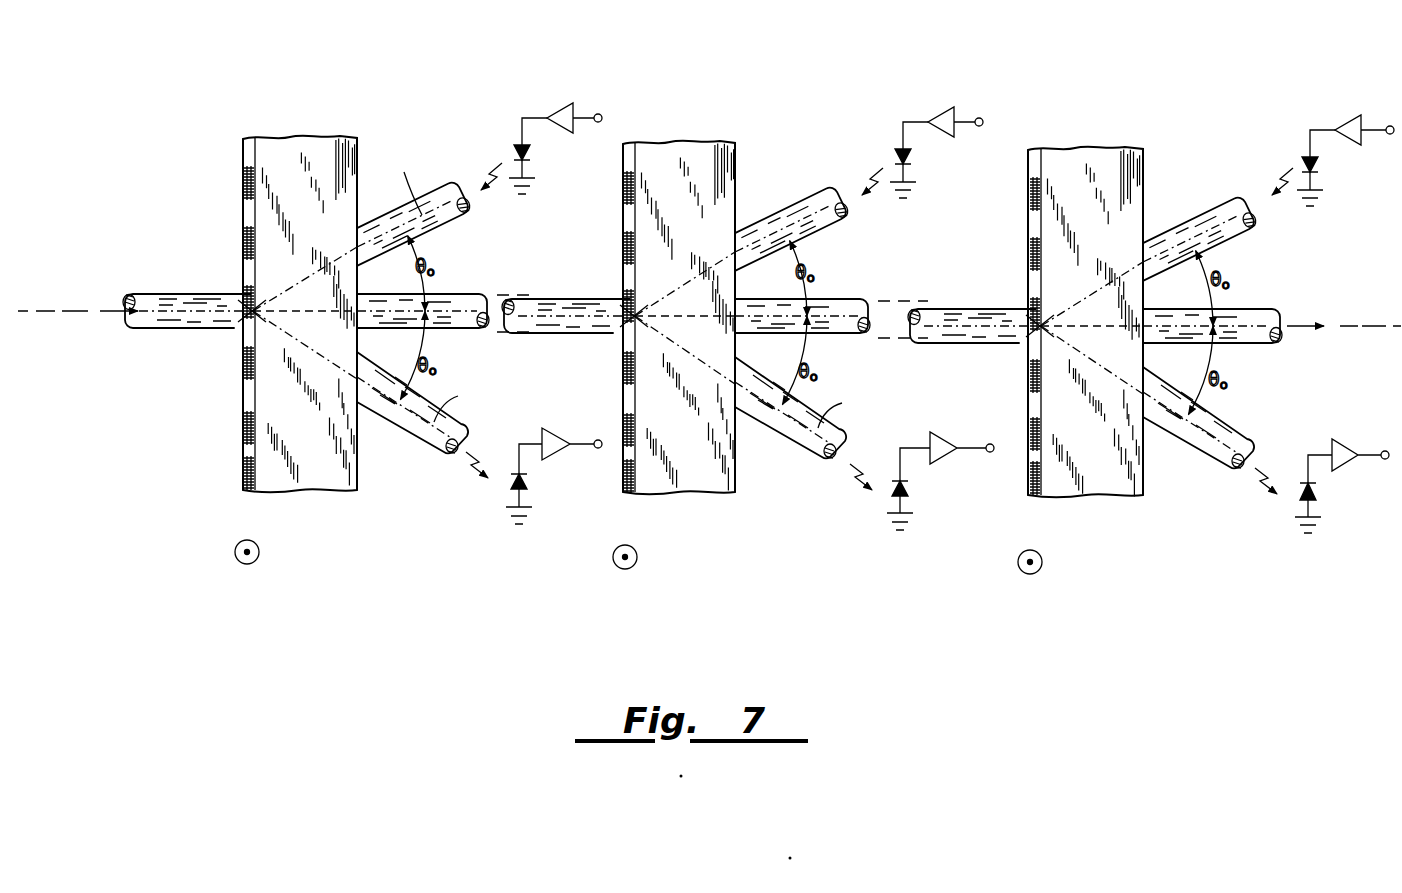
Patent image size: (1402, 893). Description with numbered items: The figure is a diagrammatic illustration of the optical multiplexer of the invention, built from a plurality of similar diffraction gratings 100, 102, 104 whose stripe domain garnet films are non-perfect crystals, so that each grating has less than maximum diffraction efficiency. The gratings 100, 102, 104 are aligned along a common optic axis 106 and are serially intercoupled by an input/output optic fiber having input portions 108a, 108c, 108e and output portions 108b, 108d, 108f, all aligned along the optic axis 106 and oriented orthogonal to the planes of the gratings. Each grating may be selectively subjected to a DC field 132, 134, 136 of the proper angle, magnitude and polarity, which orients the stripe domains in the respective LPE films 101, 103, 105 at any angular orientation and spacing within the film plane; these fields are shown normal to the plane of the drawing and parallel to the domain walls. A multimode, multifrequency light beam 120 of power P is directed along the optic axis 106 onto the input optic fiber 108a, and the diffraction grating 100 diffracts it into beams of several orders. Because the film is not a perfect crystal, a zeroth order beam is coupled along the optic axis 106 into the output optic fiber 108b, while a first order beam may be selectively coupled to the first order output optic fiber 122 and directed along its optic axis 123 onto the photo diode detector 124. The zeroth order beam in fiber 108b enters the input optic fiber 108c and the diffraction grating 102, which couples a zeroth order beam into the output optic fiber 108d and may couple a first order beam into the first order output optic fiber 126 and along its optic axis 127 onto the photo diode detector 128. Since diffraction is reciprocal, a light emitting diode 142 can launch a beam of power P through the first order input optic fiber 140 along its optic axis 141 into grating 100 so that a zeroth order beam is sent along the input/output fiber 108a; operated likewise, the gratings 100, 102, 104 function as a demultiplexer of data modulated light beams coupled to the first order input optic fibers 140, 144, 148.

The diffraction grating 100 is at (309, 270).
The LPE film 101 is at (253, 137).
The diffraction grating 102 is at (682, 298).
The LPE film 103 is at (624, 495).
The diffraction grating 104 is at (1084, 301).
The LPE film 105 is at (1030, 497).
The optic axis 106 is at (57, 311).
The input optic fiber 108a is at (215, 329).
The output optic fiber 108b is at (461, 295).
The input optic fiber 108c is at (596, 334).
The output optic fiber 108d is at (849, 300).
The input optic fiber 108e is at (1000, 344).
The output optic fiber 108f is at (1262, 309).
The light beam 120 is at (114, 319).
The first order output optic fiber 122 is at (414, 443).
The optic axis 123 is at (466, 400).
The photo diode detector 124 is at (527, 485).
The first order output optic fiber 126 is at (792, 450).
The optic axis 127 is at (851, 408).
The photo diode detector 128 is at (907, 488).
The DC field 132 is at (257, 562).
The DC field 134 is at (635, 567).
The DC field 136 is at (1040, 572).
The first order input optic fiber 140 is at (448, 220).
The optic axis 141 is at (407, 180).
The light emitting diode 142 is at (527, 156).
The first order input optic fiber 144 is at (830, 226).
The first order input optic fiber 148 is at (1242, 233).